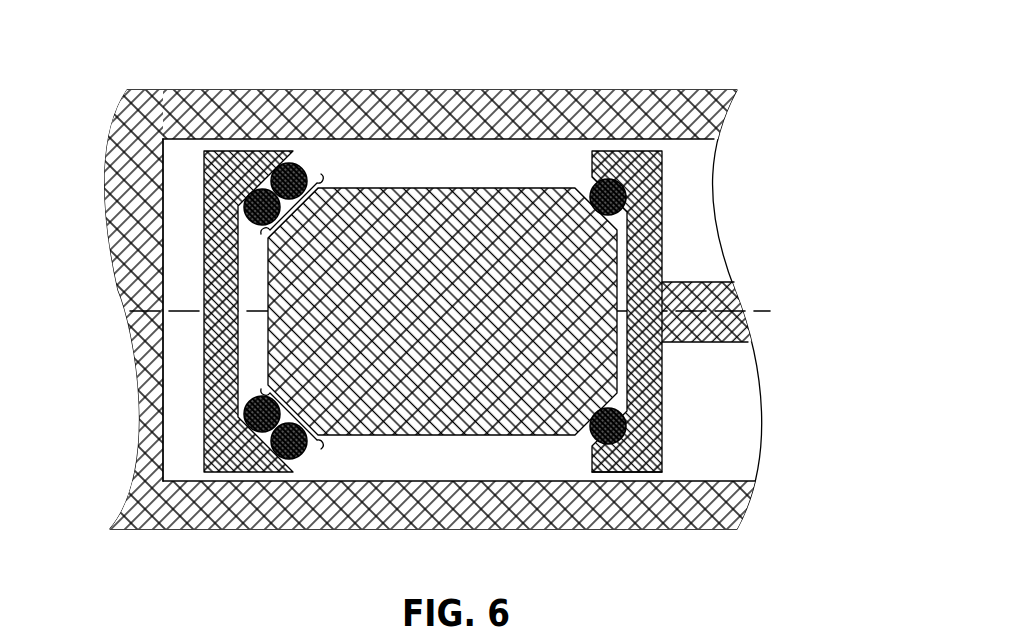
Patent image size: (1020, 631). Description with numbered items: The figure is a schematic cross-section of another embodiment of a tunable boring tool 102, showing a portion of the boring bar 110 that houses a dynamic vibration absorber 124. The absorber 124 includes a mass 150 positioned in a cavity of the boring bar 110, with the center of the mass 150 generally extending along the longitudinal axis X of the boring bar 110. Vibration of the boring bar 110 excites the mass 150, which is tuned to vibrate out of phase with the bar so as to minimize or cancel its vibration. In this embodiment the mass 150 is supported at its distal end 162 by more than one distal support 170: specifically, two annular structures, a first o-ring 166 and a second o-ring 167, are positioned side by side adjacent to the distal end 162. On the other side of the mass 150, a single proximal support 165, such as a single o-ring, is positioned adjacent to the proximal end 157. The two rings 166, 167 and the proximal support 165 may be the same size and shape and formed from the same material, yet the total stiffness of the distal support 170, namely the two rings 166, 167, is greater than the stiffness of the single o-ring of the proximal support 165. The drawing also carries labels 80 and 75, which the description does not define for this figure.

The tunable boring tool 102 is at (785, 108).
The boring bar 110 is at (697, 92).
The dynamic vibration absorber 124 is at (755, 217).
The longitudinal axis X is at (650, 350).
The left seal carrier 80 is at (250, 267).
The proximal end 157 is at (640, 284).
The mass 150 is at (428, 285).
The distal end 162 is at (268, 347).
The seal interface 75 is at (650, 423).
The distal support 170 is at (265, 237).
The second o-ring 167 is at (252, 194).
The first o-ring 166 is at (303, 165).
The proximal support 165 is at (604, 180).